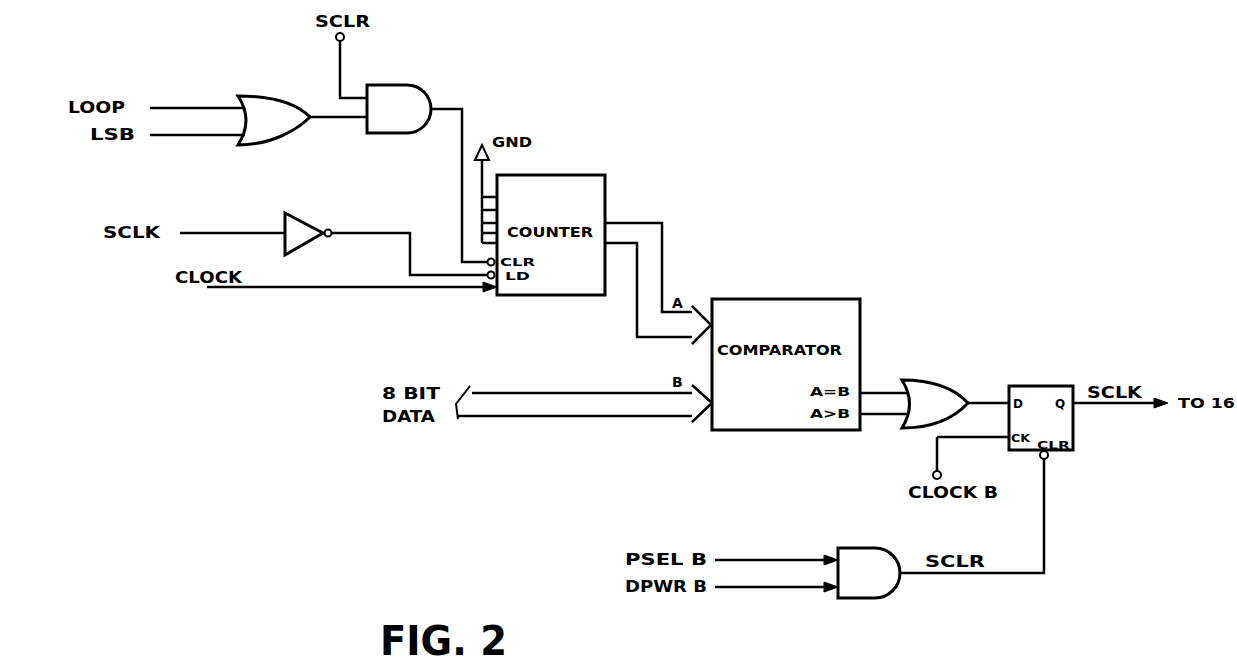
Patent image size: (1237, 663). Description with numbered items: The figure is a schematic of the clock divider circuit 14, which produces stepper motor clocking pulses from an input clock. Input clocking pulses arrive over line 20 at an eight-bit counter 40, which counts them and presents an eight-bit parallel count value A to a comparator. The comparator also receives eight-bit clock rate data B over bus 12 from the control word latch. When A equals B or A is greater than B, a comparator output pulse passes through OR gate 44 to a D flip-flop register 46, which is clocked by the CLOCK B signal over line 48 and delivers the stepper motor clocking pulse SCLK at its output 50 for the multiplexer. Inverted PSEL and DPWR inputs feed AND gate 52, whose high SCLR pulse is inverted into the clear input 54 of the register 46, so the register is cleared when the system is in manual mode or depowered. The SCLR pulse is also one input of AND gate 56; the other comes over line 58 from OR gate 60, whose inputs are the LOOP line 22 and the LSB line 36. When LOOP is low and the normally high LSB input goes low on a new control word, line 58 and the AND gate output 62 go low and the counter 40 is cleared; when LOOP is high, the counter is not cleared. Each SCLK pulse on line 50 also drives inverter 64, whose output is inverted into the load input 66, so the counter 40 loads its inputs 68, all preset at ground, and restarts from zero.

The bus 12 is at (525, 418).
The clock divider circuit 14 is at (757, 128).
The line 20 is at (294, 289).
The LOOP line 22 is at (178, 108).
The LSB line 36 is at (170, 136).
The eight-bit counter 40 is at (580, 175).
The OR gate 44 is at (935, 380).
The D flip-flop register 46 is at (1038, 386).
The line 48 is at (960, 437).
The output 50 is at (1118, 406).
The AND gate 52 is at (880, 598).
The clear input 54 is at (1060, 456).
The AND gate 56 is at (405, 85).
The line 58 is at (322, 118).
The OR gate 60 is at (275, 96).
The output 62 is at (443, 107).
The inverter 64 is at (303, 224).
The load input 66 is at (496, 279).
The inputs 68 is at (488, 195).